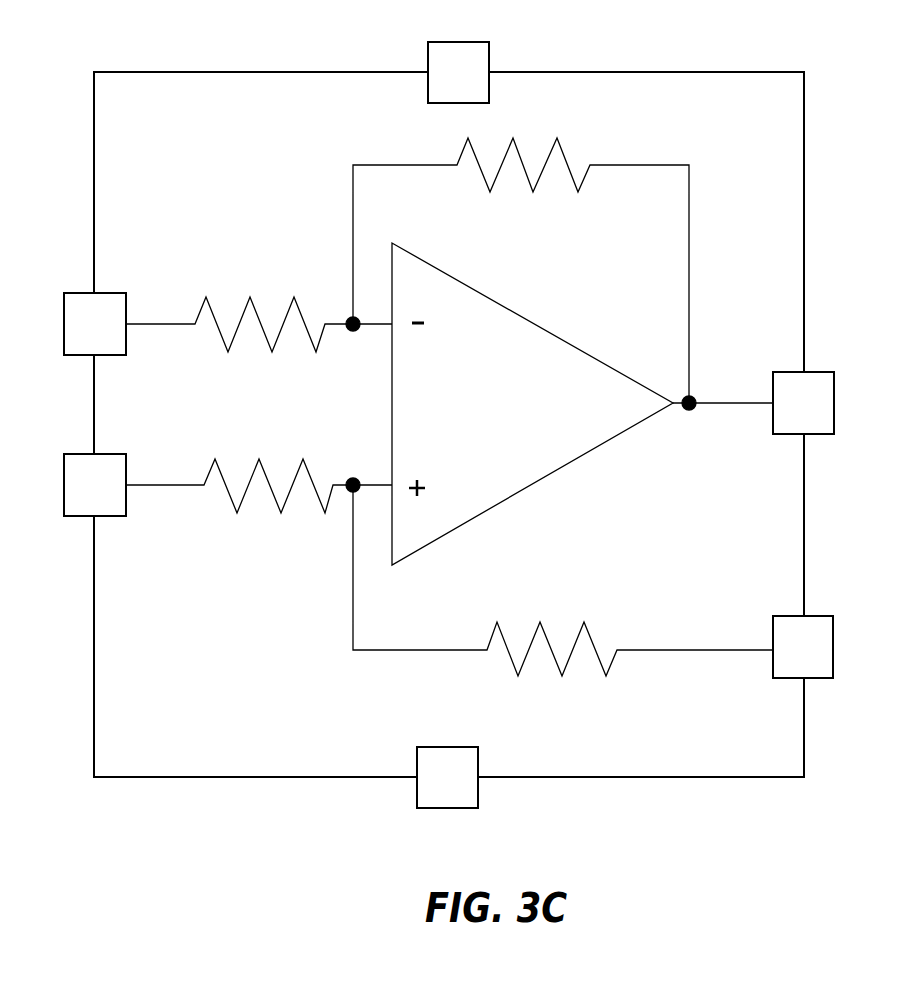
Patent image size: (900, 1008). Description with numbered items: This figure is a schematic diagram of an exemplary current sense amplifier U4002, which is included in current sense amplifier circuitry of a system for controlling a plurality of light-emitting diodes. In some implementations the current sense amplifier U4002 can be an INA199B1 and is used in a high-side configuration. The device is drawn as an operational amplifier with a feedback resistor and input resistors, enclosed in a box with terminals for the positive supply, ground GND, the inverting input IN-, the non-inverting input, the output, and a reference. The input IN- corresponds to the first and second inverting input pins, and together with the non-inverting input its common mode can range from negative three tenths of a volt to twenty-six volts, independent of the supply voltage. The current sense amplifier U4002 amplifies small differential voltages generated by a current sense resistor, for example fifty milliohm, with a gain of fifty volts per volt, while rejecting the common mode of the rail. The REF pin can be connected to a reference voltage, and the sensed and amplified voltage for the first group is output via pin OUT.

The current sense amplifier U4002 is at (455, 427).
The ground GND is at (447, 799).
The input IN- is at (71, 324).
The pin OUT is at (835, 403).
The REF pin REF is at (835, 647).